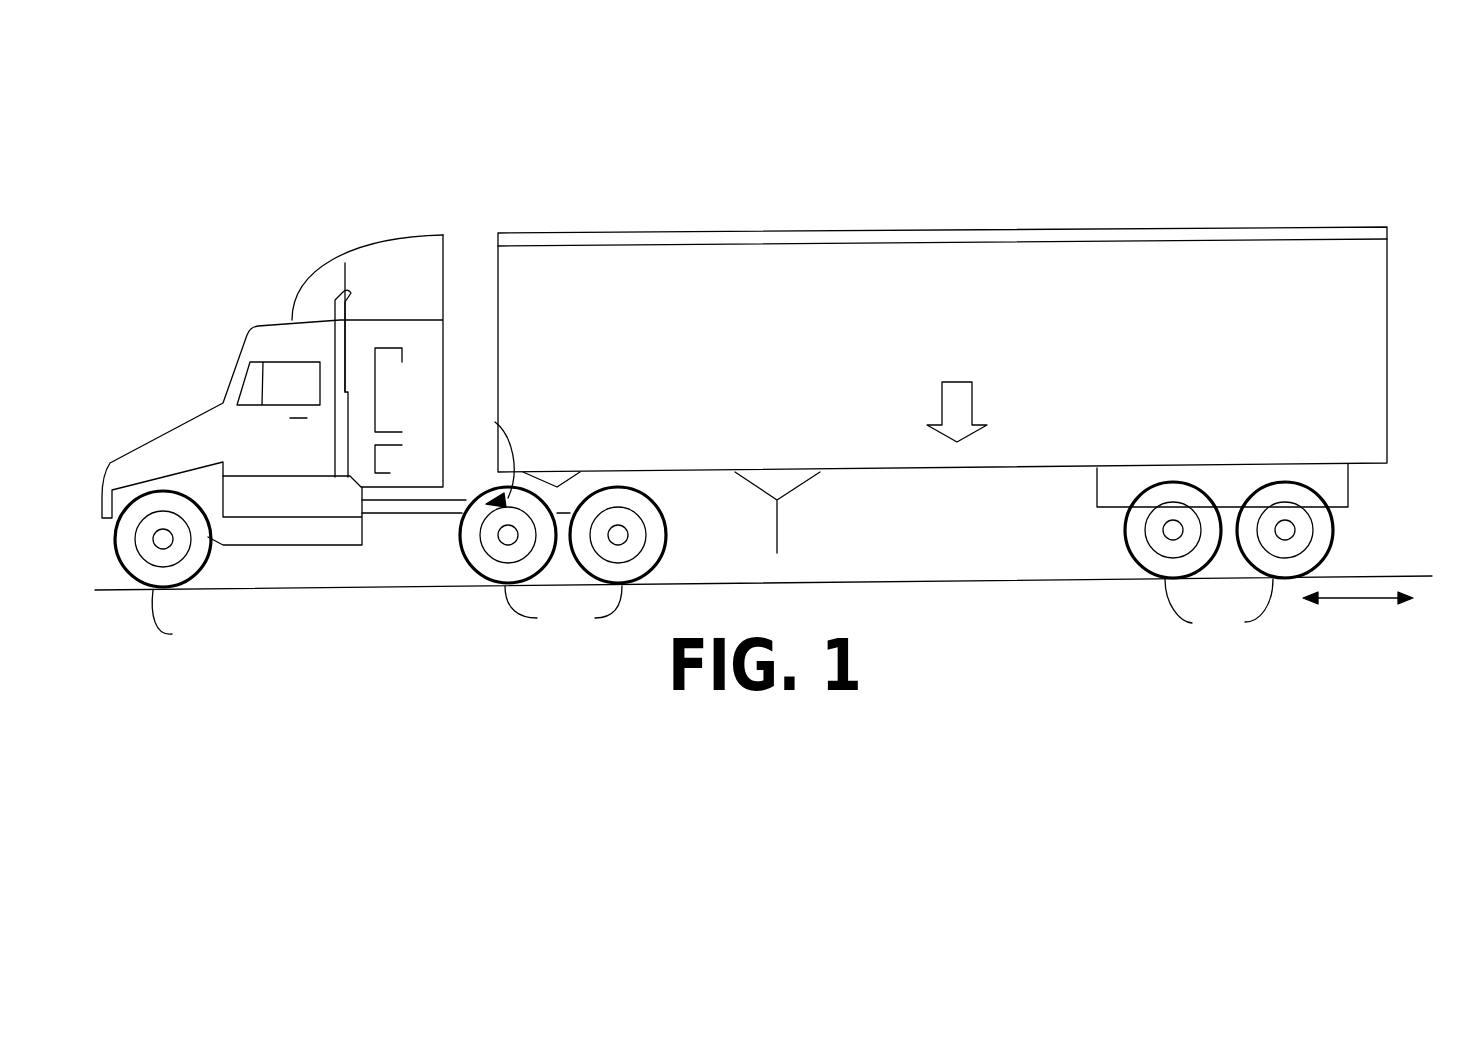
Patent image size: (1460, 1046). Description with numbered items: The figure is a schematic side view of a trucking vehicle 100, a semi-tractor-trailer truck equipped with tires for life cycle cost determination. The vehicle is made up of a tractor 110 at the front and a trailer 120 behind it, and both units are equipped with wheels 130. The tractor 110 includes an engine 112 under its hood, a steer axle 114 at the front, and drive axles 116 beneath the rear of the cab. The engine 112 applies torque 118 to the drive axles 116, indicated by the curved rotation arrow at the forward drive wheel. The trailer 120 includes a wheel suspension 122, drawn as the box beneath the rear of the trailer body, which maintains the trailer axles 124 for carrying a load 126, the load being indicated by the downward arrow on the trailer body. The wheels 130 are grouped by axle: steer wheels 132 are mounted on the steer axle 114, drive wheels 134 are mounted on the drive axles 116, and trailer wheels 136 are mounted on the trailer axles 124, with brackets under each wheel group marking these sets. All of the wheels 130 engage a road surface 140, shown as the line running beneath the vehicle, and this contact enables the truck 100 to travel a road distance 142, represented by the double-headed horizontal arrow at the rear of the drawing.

The trucking vehicle 100 is at (180, 265).
The tractor 110 is at (283, 456).
The engine 112 is at (167, 408).
The steer axle 114 is at (168, 543).
The drive axles 116 is at (503, 542).
The torque 118 is at (483, 455).
The trailer 120 is at (847, 352).
The wheel suspension 122 is at (1097, 481).
The trailer axles 124 is at (1163, 529).
The load 126 is at (952, 445).
The wheels 130 is at (410, 613).
The steer wheels 132 is at (188, 621).
The drive wheels 134 is at (563, 613).
The trailer wheels 136 is at (1219, 614).
The road surface 140 is at (1372, 575).
The road distance 142 is at (1340, 600).